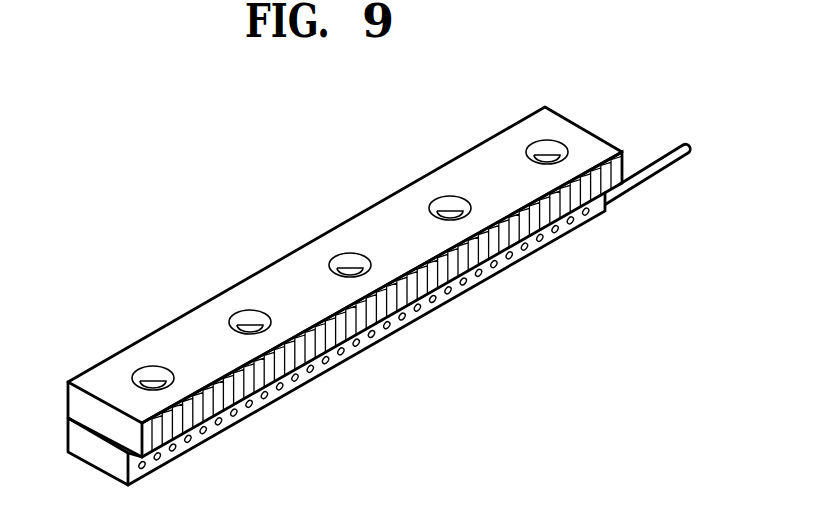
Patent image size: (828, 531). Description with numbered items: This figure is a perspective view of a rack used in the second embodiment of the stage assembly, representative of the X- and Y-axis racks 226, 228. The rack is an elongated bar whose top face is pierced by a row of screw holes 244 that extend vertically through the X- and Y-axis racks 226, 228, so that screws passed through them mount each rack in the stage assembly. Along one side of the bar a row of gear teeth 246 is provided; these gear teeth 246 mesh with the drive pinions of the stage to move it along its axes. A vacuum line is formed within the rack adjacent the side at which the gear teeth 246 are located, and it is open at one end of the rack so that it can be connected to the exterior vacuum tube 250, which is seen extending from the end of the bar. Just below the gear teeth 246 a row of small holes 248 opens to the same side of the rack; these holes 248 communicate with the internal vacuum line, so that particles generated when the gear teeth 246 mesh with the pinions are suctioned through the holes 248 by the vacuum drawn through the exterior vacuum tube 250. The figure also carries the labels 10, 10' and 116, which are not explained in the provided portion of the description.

The X-axis rack 226 is at (305, 245).
The Y-axis rack 228 is at (345, 296).
The screw holes 244 is at (570, 148).
The optical fiber array block 10 is at (382, 283).
The optical fiber array block (alternate) 10' is at (375, 334).
The comb teeth / fiber guide ribs 116 is at (382, 305).
The holes 248 is at (460, 295).
The gear teeth 246 is at (320, 363).
The exterior vacuum tube 250 is at (647, 182).